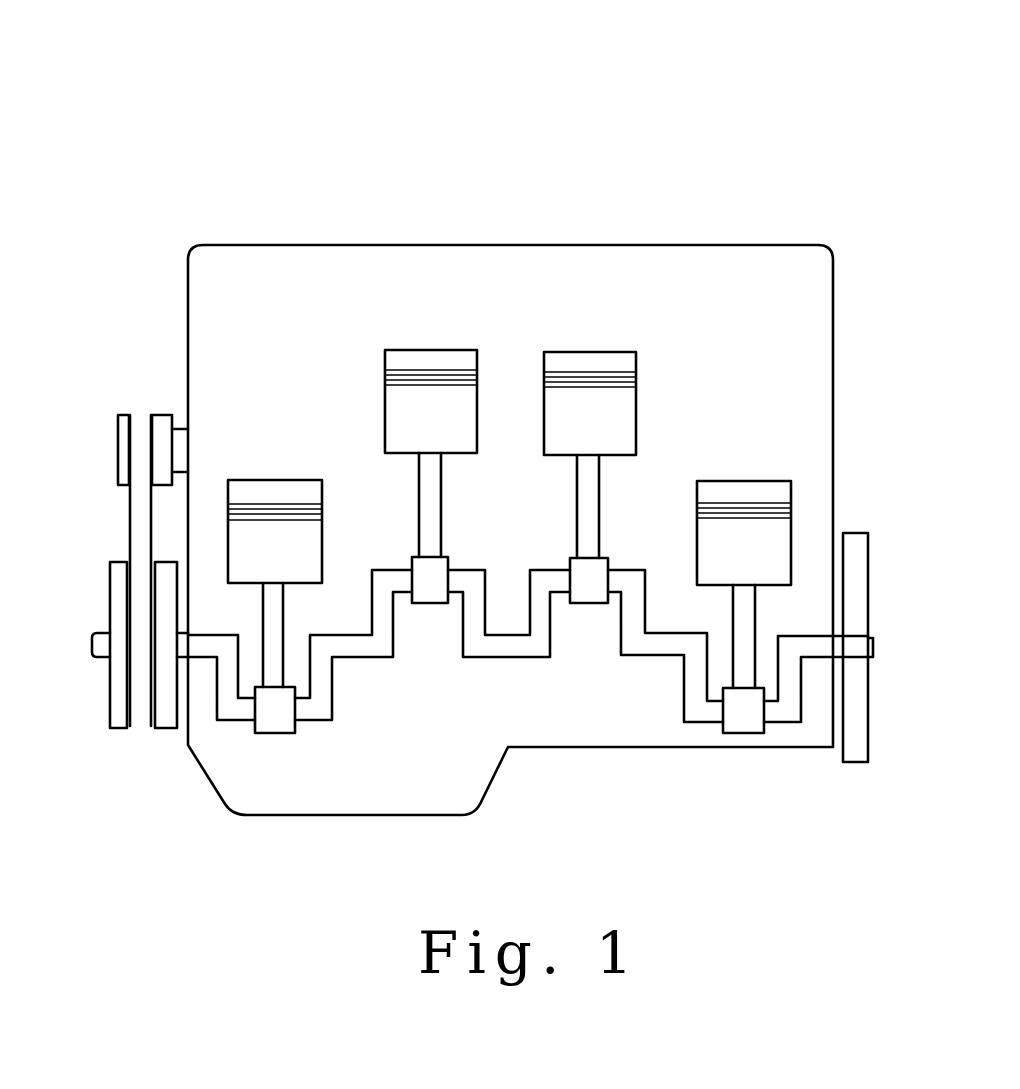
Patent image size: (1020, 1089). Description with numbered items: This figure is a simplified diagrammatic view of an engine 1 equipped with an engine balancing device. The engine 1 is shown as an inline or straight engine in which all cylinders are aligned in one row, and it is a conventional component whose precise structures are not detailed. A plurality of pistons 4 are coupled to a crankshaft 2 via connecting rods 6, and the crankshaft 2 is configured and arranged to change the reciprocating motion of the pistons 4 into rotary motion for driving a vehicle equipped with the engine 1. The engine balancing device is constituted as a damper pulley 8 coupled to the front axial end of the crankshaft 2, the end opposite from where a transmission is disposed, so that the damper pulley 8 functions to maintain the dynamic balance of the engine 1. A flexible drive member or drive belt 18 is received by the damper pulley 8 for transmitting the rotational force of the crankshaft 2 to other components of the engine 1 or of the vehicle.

The engine 1 is at (747, 138).
The crankshaft 2 is at (517, 645).
The pistons 4 is at (590, 401).
The connecting rods 6 is at (430, 482).
The damper pulley 8 is at (122, 590).
The drive belt 18 is at (143, 430).